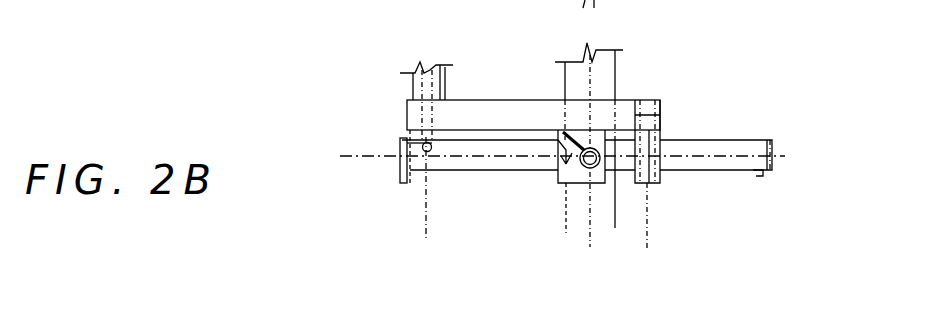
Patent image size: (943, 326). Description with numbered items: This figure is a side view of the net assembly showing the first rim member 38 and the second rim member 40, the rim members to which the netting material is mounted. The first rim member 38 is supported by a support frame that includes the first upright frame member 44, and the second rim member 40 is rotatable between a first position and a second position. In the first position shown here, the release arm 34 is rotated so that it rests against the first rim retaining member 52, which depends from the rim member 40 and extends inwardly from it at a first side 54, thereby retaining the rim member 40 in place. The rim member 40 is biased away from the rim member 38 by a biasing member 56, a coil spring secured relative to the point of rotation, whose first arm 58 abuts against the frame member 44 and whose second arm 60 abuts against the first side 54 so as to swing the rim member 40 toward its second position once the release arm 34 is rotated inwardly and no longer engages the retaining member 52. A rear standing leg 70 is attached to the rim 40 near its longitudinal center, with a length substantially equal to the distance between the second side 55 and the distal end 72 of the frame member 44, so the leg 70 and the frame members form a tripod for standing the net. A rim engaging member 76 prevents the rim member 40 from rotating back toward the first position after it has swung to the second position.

The release arm 34 is at (403, 147).
The first rim member 38 is at (473, 100).
The second rim member 40 is at (455, 171).
The first upright frame member 44 is at (617, 72).
The first rim retaining member 52 is at (417, 134).
The first side 54 is at (512, 143).
The second side 55 is at (437, 171).
The biasing member 56 is at (604, 250).
The first arm 58 is at (563, 132).
The second arm 60 is at (568, 247).
The leg 70 is at (402, 183).
The distal end 72 is at (608, 183).
The rim engaging member 76 is at (660, 137).